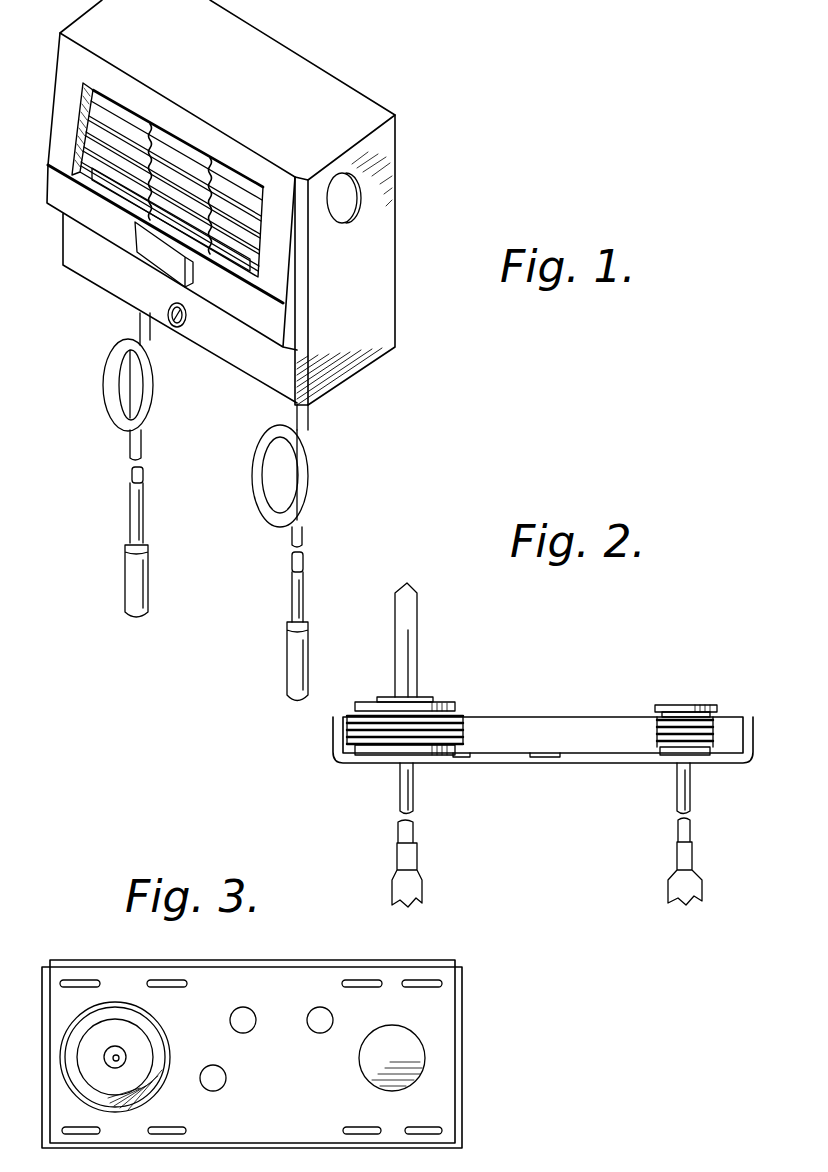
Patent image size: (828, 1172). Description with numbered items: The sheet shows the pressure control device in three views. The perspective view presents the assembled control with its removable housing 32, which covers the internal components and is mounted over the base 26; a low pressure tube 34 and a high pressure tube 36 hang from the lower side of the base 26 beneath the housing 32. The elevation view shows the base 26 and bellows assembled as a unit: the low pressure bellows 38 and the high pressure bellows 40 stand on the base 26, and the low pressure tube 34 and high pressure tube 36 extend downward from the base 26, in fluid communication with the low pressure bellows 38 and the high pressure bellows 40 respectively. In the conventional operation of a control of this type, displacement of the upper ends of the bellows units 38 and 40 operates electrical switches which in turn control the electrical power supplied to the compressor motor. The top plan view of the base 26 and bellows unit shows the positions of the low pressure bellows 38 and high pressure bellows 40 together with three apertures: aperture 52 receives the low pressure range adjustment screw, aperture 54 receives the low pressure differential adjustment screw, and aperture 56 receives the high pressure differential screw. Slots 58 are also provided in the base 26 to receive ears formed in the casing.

In FIG. 2, the base 26 is at (507, 762).
In FIG. 3, the base 26 is at (443, 1008).
In FIG. 1, the removable housing 32 is at (332, 90).
In FIG. 1, the low pressure tube 34 is at (105, 392).
In FIG. 2, the low pressure tube 34 is at (402, 797).
In FIG. 1, the high pressure tube 36 is at (308, 472).
In FIG. 2, the high pressure tube 36 is at (692, 797).
In FIG. 2, the low pressure bellows 38 is at (460, 717).
In FIG. 3, the low pressure bellows 38 is at (63, 1035).
In FIG. 2, the high pressure bellows 40 is at (658, 720).
In FIG. 3, the high pressure bellows 40 is at (420, 1058).
In FIG. 3, the aperture 52 is at (218, 1065).
In FIG. 3, the aperture 54 is at (262, 992).
In FIG. 3, the aperture 56 is at (327, 994).
In FIG. 3, the slots 58 is at (153, 980).